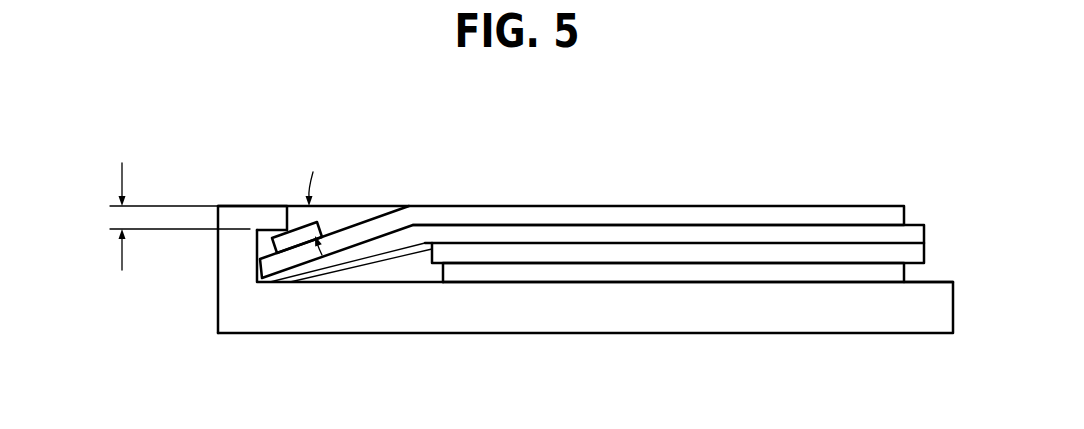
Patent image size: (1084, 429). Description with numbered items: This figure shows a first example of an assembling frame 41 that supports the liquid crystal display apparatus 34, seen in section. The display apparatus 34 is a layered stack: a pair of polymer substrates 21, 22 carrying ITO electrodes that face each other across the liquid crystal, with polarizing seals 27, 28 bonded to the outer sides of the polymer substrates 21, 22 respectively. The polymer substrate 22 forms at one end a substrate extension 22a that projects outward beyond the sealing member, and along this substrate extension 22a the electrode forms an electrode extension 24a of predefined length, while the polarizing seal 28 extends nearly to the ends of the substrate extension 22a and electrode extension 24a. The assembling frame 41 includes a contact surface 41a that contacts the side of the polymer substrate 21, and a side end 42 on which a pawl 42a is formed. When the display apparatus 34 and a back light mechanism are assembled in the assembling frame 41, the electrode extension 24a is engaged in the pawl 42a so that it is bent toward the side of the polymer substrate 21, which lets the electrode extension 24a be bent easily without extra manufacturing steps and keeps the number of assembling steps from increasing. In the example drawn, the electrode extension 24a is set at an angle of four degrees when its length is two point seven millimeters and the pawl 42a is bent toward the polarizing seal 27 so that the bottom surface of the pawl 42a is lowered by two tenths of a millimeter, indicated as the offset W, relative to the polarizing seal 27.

The liquid crystal display apparatus 34 is at (592, 191).
The polarizing seal 28 is at (783, 215).
The polymer substrate 22 is at (667, 233).
The substrate extension 22a is at (393, 238).
The polymer substrate 21 is at (577, 252).
The electrode extension 24a is at (382, 259).
The polarizing seal 27 is at (688, 272).
The assembling frame 41 is at (546, 322).
The contact surface 41a is at (836, 283).
The side end 42 is at (218, 272).
The pawl 42a is at (257, 217).
The width dimension W is at (118, 221).